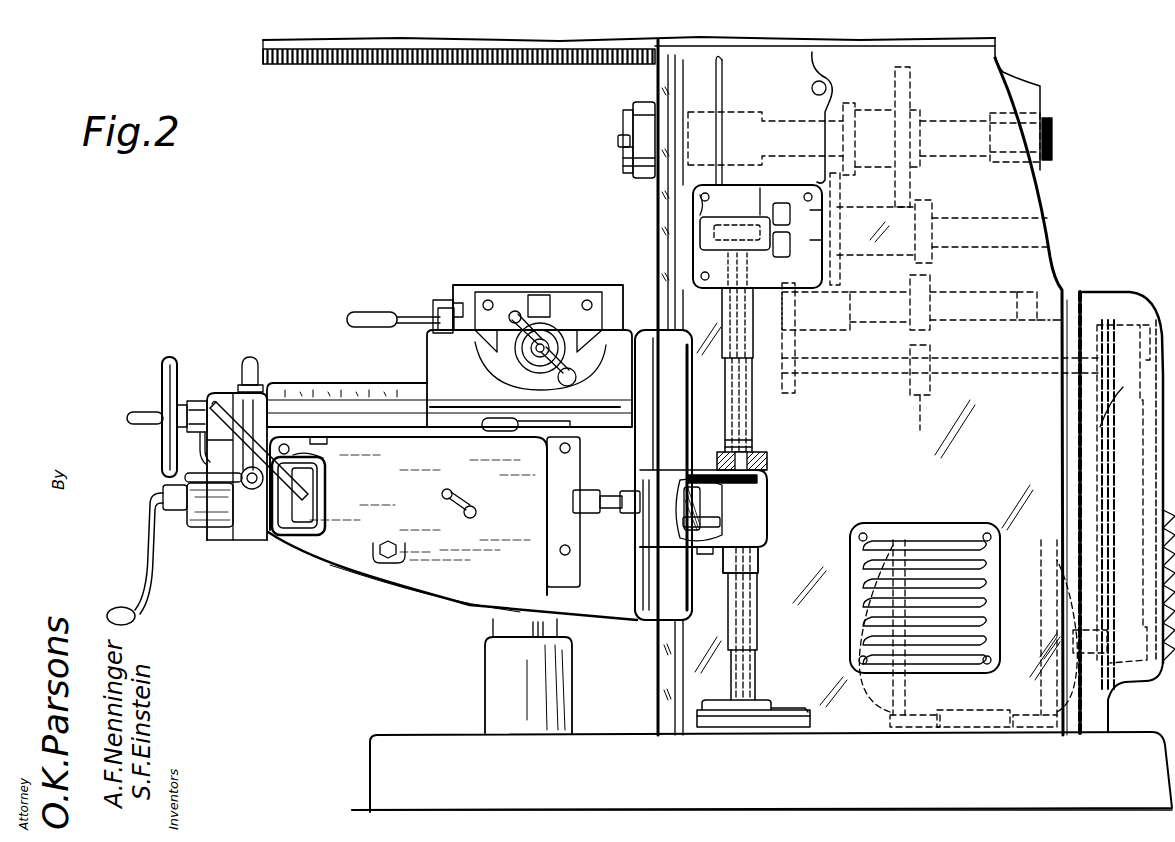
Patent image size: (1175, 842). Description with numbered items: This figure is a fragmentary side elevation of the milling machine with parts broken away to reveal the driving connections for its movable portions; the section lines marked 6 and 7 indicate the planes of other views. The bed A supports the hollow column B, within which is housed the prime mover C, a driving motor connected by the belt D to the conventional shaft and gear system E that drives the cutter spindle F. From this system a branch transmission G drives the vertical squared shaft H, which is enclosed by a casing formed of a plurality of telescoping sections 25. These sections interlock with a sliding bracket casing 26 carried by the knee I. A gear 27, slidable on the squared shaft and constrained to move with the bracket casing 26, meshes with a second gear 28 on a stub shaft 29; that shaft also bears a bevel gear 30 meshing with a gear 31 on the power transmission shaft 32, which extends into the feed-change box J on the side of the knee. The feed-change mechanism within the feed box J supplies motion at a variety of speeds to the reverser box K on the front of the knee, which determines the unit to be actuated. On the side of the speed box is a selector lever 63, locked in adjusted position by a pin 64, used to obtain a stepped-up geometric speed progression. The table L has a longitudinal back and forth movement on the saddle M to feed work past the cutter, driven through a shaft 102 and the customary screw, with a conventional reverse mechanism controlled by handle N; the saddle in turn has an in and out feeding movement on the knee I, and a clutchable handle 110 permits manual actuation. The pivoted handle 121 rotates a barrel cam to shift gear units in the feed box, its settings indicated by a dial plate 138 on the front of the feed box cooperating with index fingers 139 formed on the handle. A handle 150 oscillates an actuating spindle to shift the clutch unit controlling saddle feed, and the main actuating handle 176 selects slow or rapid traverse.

The bed A is at (372, 738).
The hollow column B is at (941, 352).
The prime mover C is at (1022, 577).
The belt D is at (1123, 420).
The shaft and gear system E is at (980, 163).
The cutter spindle F is at (624, 128).
The branch transmission G is at (800, 345).
The vertical squared shaft H is at (758, 445).
The knee I is at (488, 602).
The feed-change box J is at (333, 553).
The reverser box K is at (232, 508).
The table L is at (626, 300).
The saddle M is at (440, 385).
The handle N is at (378, 312).
The telescoping sections 25 is at (757, 562).
The sliding bracket casing 26 is at (648, 538).
The gear 27 is at (757, 492).
The second gear 28 is at (683, 468).
The stub shaft 29 is at (717, 505).
The bevel gear 30 is at (728, 525).
The gear 31 is at (690, 540).
The power transmission shaft 32 is at (573, 494).
The selector lever 63 is at (474, 506).
The pin 64 is at (452, 485).
The shaft 102 is at (483, 290).
The clutchable handle 110 is at (152, 522).
The handle 121 is at (216, 392).
The dial plate 138 is at (268, 515).
The index fingers 139 is at (325, 462).
The handle 150 is at (262, 379).
The main actuating handle 176 is at (200, 437).
The section line 6- 6 is at (56, 345).
The section line 7- 7 is at (340, 293).